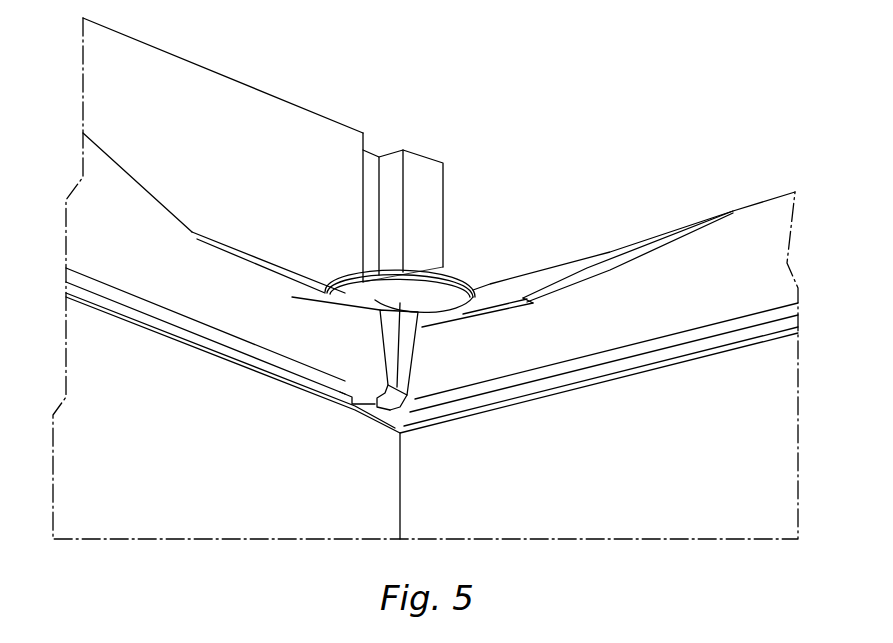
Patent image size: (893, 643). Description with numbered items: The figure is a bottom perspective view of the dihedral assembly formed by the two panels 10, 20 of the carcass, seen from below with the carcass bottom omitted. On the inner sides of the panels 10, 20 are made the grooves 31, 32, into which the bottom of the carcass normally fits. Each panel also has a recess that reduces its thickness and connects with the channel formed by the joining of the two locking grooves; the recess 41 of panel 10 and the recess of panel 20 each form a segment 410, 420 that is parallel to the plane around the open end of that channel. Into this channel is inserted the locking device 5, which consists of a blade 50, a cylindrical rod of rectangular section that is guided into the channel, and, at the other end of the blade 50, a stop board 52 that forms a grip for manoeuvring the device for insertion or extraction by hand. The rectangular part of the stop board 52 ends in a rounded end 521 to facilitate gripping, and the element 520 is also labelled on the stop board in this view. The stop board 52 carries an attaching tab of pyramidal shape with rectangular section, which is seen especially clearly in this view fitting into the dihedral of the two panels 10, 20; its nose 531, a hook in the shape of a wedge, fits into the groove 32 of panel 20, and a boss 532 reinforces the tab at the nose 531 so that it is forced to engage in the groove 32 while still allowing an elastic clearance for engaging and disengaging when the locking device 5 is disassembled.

The panel 10 is at (757, 240).
The panel 20 is at (165, 78).
The groove 31 is at (653, 363).
The groove 32 is at (123, 308).
The recess 41 is at (585, 270).
The segment 410 is at (523, 300).
The segment 420 is at (248, 250).
The locking device 5 is at (448, 257).
The blade 50 is at (359, 412).
The stop board 52 is at (372, 290).
The clip leg 520 is at (352, 307).
The rounded end 521 is at (455, 278).
The nose 531 is at (398, 407).
The boss 532 is at (400, 404).